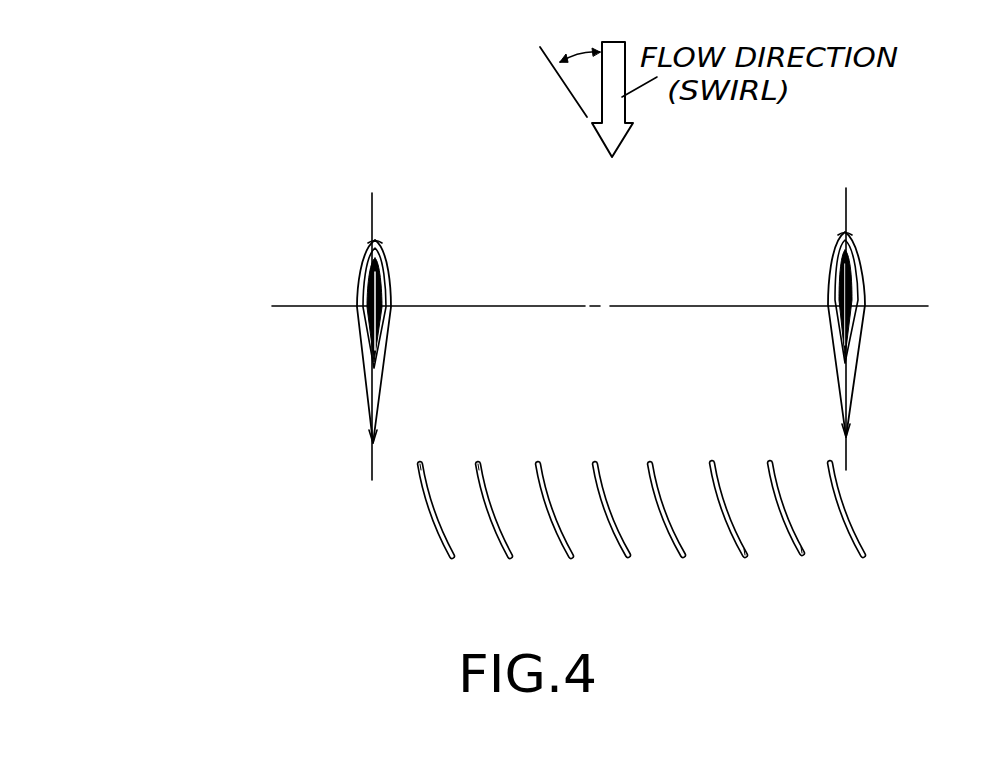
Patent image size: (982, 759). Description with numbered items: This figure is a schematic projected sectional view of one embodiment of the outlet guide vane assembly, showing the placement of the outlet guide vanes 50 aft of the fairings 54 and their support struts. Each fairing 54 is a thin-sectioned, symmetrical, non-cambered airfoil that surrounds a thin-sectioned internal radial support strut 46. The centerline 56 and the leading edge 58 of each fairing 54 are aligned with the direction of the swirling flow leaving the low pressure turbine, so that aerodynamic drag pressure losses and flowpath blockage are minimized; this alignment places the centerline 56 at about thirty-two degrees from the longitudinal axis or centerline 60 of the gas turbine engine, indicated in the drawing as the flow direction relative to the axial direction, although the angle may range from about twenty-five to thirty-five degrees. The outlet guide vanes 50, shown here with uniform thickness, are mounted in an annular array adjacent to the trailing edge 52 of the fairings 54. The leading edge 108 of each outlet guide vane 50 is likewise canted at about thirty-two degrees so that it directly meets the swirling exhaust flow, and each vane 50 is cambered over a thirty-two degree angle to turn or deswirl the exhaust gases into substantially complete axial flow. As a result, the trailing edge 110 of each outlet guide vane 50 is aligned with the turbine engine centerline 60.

The internal radial support strut 46 is at (367, 245).
The outlet guide vane 50 is at (418, 489).
The trailing edge 52 is at (370, 442).
The fairing 54 is at (358, 278).
The centerline 56 is at (372, 193).
The leading edge 58 is at (375, 238).
The longitudinal axis or centerline 60 is at (545, 50).
The leading edge 108 is at (478, 462).
The trailing edge 110 is at (802, 554).